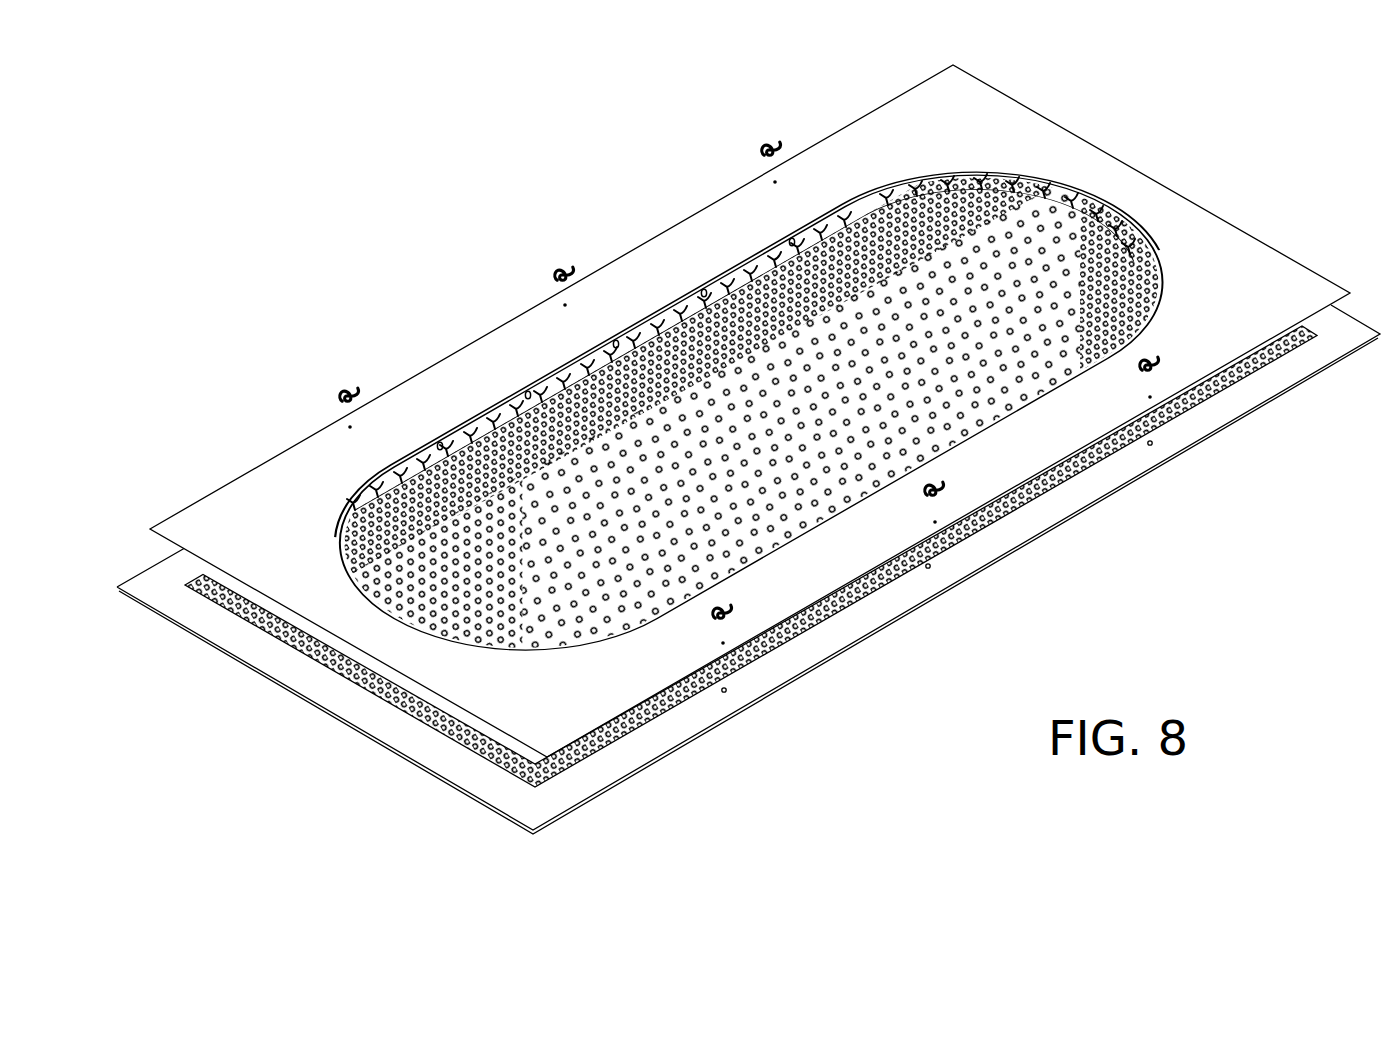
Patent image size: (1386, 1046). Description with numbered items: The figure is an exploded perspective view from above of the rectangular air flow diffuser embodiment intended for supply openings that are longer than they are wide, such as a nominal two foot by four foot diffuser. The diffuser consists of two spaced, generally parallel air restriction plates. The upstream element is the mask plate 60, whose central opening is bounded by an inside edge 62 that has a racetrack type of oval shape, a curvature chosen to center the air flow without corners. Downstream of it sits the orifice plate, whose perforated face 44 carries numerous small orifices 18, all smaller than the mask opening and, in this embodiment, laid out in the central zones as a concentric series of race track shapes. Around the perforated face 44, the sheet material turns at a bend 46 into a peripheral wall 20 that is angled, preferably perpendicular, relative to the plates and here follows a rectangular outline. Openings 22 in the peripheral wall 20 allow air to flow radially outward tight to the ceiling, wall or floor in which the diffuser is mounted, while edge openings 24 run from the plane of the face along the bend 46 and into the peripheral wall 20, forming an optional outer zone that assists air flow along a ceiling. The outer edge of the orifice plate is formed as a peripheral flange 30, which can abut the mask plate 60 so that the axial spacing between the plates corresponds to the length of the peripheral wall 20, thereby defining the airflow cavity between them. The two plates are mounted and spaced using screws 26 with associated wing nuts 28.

The orifices 18 is at (1089, 290).
The peripheral wall 20 is at (643, 333).
The openings 22 is at (528, 397).
The edge openings 24 is at (517, 395).
The screws 26 is at (725, 688).
The wing nuts 28 is at (352, 390).
The peripheral flange 30 is at (873, 608).
The perforated face 44 is at (967, 318).
The bend 46 is at (762, 277).
The mask plate 60 is at (707, 235).
The inside edge 62 is at (477, 440).